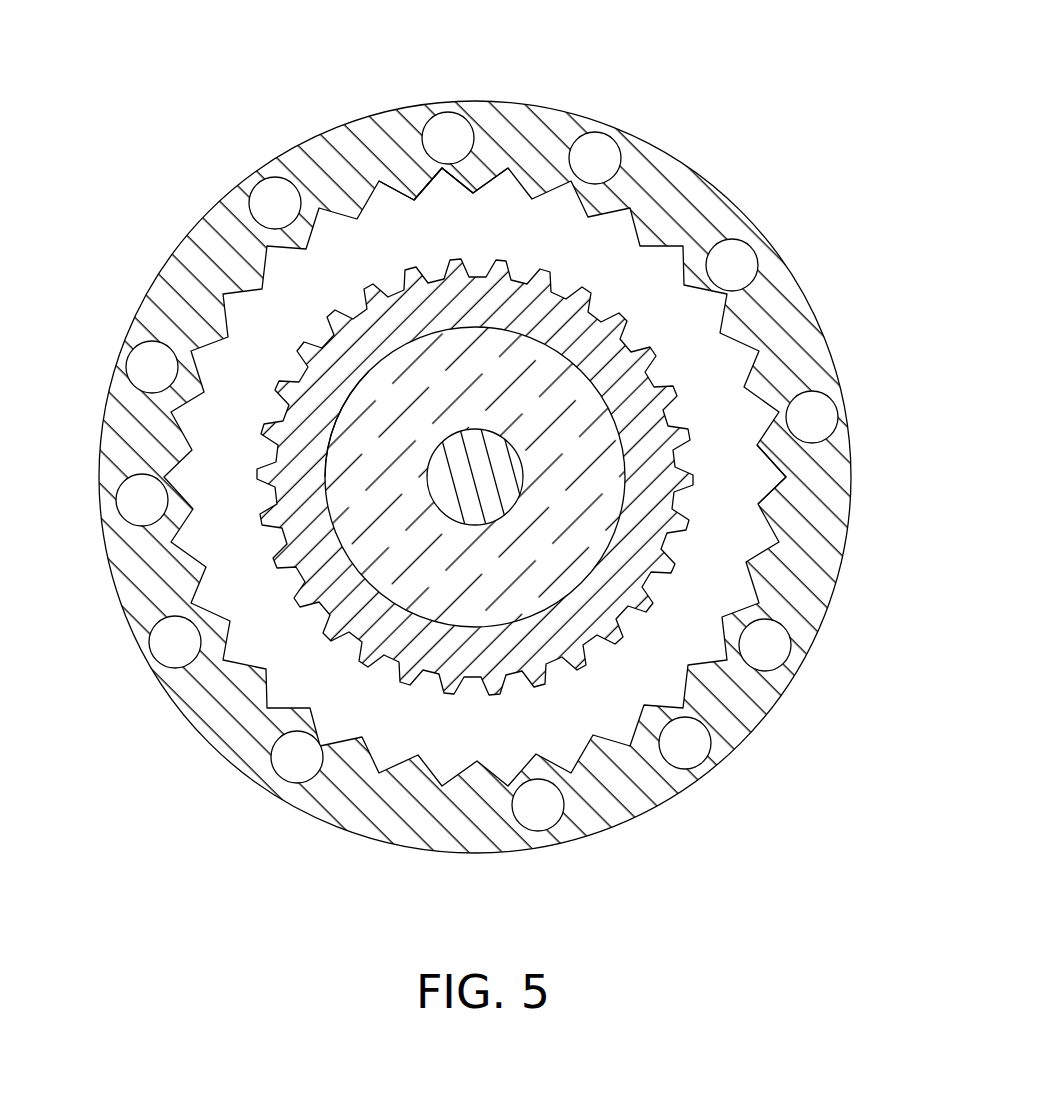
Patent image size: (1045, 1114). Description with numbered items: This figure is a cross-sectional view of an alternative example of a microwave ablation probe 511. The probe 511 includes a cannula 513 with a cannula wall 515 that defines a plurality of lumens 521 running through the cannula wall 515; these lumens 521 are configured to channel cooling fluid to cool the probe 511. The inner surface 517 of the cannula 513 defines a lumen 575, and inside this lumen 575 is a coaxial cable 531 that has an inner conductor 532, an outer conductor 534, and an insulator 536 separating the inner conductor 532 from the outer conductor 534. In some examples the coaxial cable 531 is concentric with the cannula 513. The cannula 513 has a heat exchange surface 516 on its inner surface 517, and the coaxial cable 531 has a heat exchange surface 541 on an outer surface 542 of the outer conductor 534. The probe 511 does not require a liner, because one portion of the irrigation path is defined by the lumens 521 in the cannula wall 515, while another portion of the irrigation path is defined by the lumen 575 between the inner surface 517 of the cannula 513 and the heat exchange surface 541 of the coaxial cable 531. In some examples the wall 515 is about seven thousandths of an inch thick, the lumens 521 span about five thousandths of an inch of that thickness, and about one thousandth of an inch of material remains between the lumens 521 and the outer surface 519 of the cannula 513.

The probe 511 is at (180, 58).
The cannula 513 is at (570, 132).
The cannula wall 515 is at (690, 193).
The heat exchange surface 516 is at (399, 206).
The inner surface 517 is at (447, 196).
The outer surface 519 is at (234, 186).
The lumens 521 is at (737, 267).
The coaxial cable 531 is at (580, 545).
The inner conductor 532 is at (445, 503).
The outer conductor 534 is at (347, 490).
The insulator 536 is at (383, 383).
The heat exchange surface 541 is at (488, 690).
The outer surface 542 is at (563, 665).
The lumen 575 is at (738, 478).